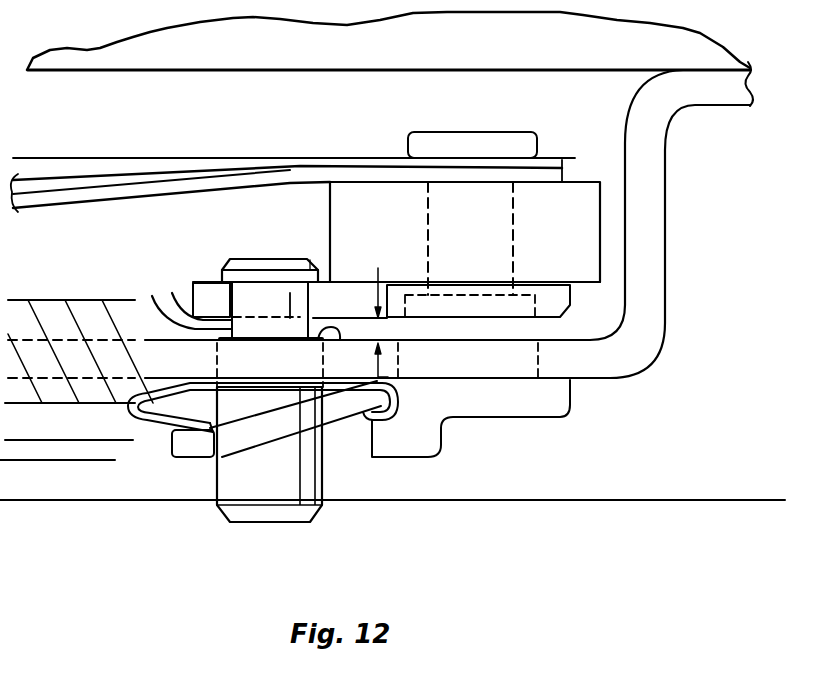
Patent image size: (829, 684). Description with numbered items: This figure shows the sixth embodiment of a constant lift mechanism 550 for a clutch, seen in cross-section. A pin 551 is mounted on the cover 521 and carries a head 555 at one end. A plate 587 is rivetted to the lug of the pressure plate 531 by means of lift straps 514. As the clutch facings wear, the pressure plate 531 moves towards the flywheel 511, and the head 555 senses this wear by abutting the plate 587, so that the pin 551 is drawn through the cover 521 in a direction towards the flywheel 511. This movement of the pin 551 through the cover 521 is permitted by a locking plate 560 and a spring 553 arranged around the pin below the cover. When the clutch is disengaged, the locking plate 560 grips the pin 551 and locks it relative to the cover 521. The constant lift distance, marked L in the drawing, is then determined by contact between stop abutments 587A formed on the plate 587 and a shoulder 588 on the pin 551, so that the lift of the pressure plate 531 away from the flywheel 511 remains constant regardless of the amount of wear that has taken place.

The flywheel 511 is at (493, 54).
The lift straps 514 is at (70, 180).
The cover 521 is at (715, 85).
The pressure plate 531 is at (590, 238).
The constant lift mechanism 550 is at (278, 220).
The pin 551 is at (305, 492).
The spring 553 is at (134, 418).
The head 555 is at (227, 265).
The locking plate 560 is at (188, 448).
The plate 587 is at (340, 300).
The stop abutments 587A is at (173, 297).
The shoulder 588 is at (338, 336).